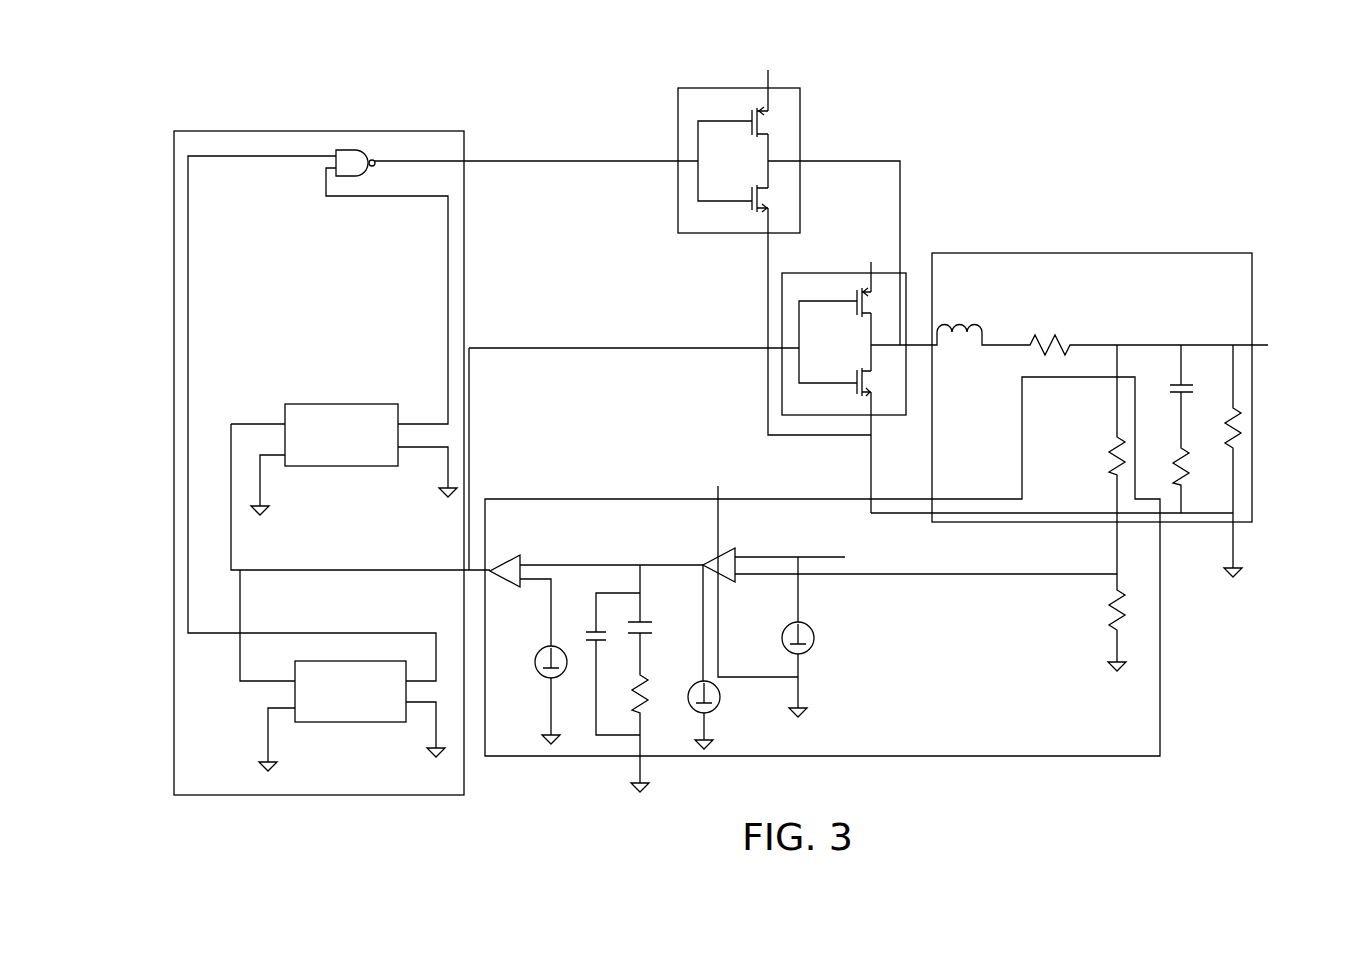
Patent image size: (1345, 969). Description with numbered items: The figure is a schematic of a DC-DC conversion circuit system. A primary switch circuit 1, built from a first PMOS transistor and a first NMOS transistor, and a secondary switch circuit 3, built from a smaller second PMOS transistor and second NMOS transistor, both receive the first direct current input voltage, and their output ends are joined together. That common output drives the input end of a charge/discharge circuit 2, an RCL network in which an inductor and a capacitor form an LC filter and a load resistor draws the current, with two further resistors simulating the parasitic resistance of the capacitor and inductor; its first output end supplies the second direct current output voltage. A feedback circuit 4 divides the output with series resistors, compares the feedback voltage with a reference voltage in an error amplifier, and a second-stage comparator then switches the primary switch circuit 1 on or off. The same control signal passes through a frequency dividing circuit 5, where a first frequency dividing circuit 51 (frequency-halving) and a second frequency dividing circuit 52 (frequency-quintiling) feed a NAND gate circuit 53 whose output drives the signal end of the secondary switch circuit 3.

The primary switch circuit 1 is at (906, 268).
The charge/discharge circuit 2 is at (1093, 254).
The secondary switch circuit 3 is at (798, 96).
The feedback circuit 4 is at (1161, 677).
The frequency dividing circuit 5 is at (318, 130).
The first frequency dividing circuit 51 is at (338, 404).
The second frequency dividing circuit 52 is at (360, 663).
The NAND gate circuit 53 is at (352, 158).